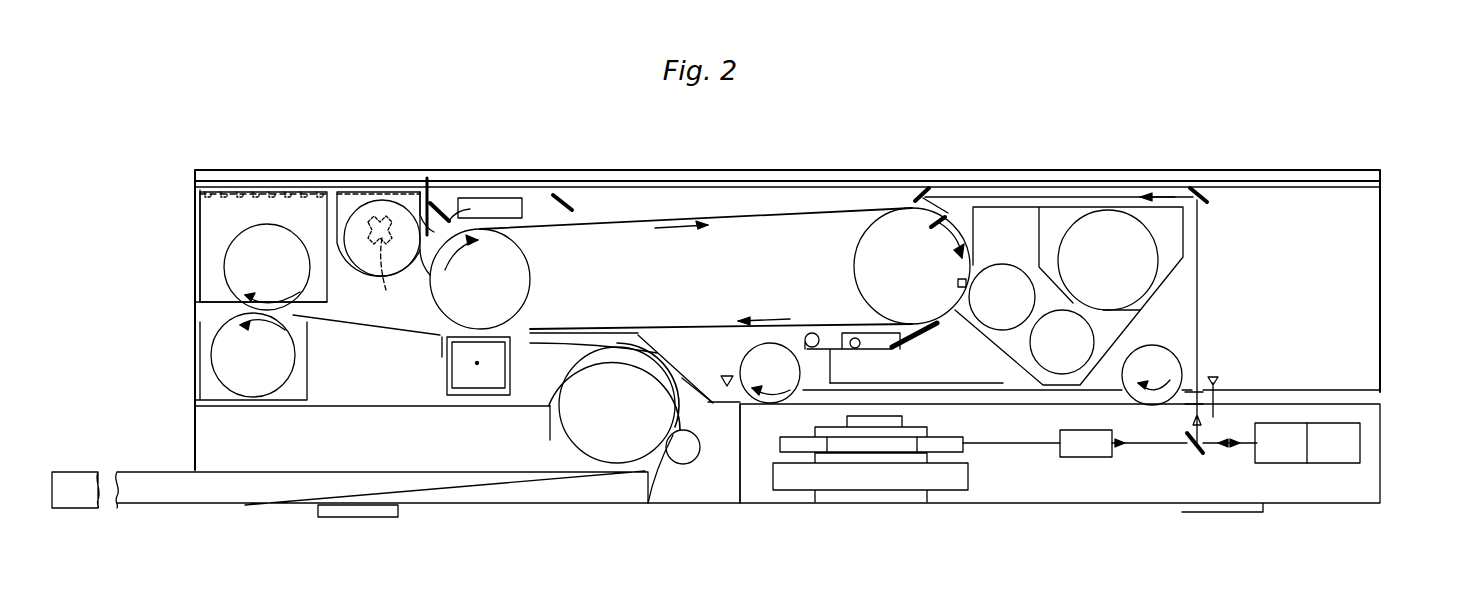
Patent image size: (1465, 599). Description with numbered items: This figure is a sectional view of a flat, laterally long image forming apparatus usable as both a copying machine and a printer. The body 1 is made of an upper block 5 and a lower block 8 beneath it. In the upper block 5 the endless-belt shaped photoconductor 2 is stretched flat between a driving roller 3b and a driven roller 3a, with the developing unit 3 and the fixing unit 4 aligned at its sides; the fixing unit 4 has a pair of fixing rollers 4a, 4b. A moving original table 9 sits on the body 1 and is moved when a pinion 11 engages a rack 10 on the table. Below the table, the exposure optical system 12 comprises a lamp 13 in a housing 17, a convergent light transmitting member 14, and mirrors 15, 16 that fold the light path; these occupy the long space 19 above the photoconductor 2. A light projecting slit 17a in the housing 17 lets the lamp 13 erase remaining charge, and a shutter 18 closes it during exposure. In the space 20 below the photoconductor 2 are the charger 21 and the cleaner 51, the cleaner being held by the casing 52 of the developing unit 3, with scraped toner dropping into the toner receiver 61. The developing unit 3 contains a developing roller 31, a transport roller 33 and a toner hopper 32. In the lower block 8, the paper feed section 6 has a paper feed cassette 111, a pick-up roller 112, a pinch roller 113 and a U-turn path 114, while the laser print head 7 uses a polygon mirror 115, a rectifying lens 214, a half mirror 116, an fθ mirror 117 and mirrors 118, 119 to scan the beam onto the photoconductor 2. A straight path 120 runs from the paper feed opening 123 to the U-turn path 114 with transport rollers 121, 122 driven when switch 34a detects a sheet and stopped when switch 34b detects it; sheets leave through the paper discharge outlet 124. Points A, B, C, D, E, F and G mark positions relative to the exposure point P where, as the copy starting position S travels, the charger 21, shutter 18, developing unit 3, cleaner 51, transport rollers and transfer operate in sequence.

The body 1 is at (1380, 240).
The photoconductor 2 is at (712, 215).
The developing unit 3 is at (1185, 255).
The driven roller 3a is at (512, 281).
The driving roller 3b is at (858, 246).
The fixing unit 4 is at (200, 246).
The fixing roller 4a is at (230, 272).
The fixing roller 4b is at (232, 352).
The upper block 5 is at (1393, 183).
The paper feed section 6 is at (205, 438).
The laser print head 7 is at (1020, 503).
The lower block 8 is at (1393, 405).
The original table 9 is at (988, 186).
The rack 10 is at (282, 210).
The pinion 11 is at (382, 256).
The exposure optical system 12 is at (490, 197).
The lamp 13 is at (365, 275).
The convergent light transmitting member 14 is at (517, 205).
The mirror 15 is at (427, 185).
The mirror 16 is at (590, 195).
The housing 17 is at (417, 280).
The light projecting slit 17a is at (418, 212).
The shutter 18 is at (440, 203).
The space 19 is at (660, 183).
The space 20 is at (536, 380).
The charger 21 is at (445, 380).
The developing roller 31 is at (1002, 272).
The toner hopper 32 is at (1140, 250).
The transport roller 33 is at (1105, 330).
The switch 34a is at (1222, 378).
The switch 34b is at (672, 390).
The cleaner 51 is at (935, 333).
The casing 52 is at (825, 372).
The toner receiver 61 is at (993, 377).
The paper feed cassette 111 is at (165, 510).
The pick-up roller 112 is at (606, 440).
The pinch roller 113 is at (683, 464).
The U-turn path 114 is at (688, 412).
The polygon mirror 115 is at (968, 455).
The half mirror 116 is at (1190, 450).
The fθ mirror 117 is at (1290, 463).
The mirror 118 is at (1200, 188).
The mirror 119 is at (914, 190).
The straight path 120 is at (1032, 397).
The transport roller 121 is at (1165, 360).
The transport roller 122 is at (757, 360).
The paper feed opening 123 is at (1378, 398).
The paper discharge outlet 124 is at (200, 318).
The rectifying lens 214 is at (1090, 458).
The point A is at (932, 238).
The point B is at (527, 321).
The point C is at (444, 278).
The point D is at (958, 283).
The point E is at (805, 322).
The point F is at (477, 300).
The point G is at (607, 224).
The exposure point P is at (560, 226).
The copy starting position S is at (940, 218).